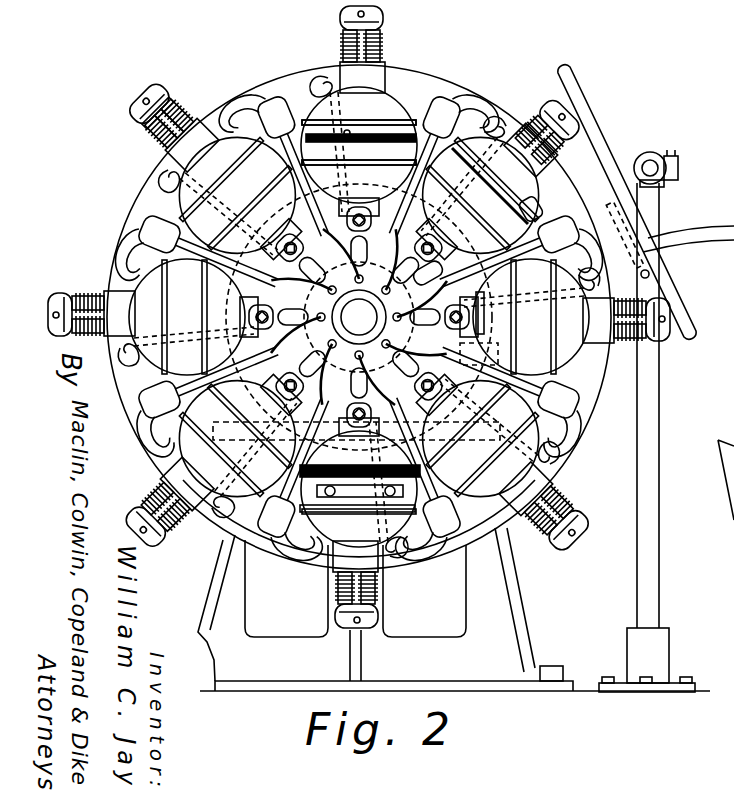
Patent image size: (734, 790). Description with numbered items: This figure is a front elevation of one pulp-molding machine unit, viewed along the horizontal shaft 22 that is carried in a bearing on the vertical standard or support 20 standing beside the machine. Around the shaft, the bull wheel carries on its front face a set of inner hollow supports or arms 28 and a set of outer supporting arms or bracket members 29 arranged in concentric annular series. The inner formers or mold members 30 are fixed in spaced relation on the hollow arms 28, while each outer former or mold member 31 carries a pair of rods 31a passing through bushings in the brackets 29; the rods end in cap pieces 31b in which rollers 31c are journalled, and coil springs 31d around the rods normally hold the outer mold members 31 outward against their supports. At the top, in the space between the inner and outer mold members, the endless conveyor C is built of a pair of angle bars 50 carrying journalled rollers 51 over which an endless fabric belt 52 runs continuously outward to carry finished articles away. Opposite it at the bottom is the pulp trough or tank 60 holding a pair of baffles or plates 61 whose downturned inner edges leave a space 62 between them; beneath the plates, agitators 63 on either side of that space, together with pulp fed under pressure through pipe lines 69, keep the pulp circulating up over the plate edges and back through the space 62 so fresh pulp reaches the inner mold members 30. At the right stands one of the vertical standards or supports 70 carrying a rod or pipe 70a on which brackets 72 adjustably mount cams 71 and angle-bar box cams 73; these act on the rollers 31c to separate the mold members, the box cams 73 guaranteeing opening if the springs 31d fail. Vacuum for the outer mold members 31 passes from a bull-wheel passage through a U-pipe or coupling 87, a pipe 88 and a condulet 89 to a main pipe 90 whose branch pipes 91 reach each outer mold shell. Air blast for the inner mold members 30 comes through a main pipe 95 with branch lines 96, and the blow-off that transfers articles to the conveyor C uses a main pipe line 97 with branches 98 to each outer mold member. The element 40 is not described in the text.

The vertical standard or support 20 is at (494, 617).
The horizontal shaft 22 is at (359, 317).
The inner hollow supports or arms 28 is at (359, 185).
The outer supporting arms or bracket members 29 is at (523, 143).
The inner formers or mold members 30 is at (265, 223).
The outer formers or mold members 31 is at (710, 323).
The rods 31a is at (173, 128).
The cap pieces 31b is at (147, 92).
The rollers 31c is at (140, 93).
The coil springs 31d is at (147, 128).
The lens cell 40 is at (452, 223).
The angle bars 50 is at (359, 151).
The rollers 51 is at (397, 133).
The endless belt 52 is at (356, 126).
The endless conveyor C is at (347, 133).
The pulp trough or tank 60 is at (227, 528).
The baffles or plates 61 is at (270, 540).
The space 62 is at (356, 478).
The agitators 63 is at (292, 532).
The pipe lines 69 is at (310, 522).
The vertical standards or supports 70 is at (657, 380).
The rod or pipe 70a is at (664, 188).
The cams 71 is at (585, 110).
The brackets 72 is at (650, 150).
The box cams 73 is at (632, 258).
The U-pipe or coupling 87 is at (435, 269).
The pipe 88 is at (535, 213).
The condulet 89 is at (534, 200).
The main pipe 90 is at (588, 277).
The branch pipes 91 is at (490, 186).
The main pipe 95 is at (484, 340).
The branch lines 96 is at (492, 313).
The main pipe line 97 is at (491, 317).
The branches 98 is at (649, 274).